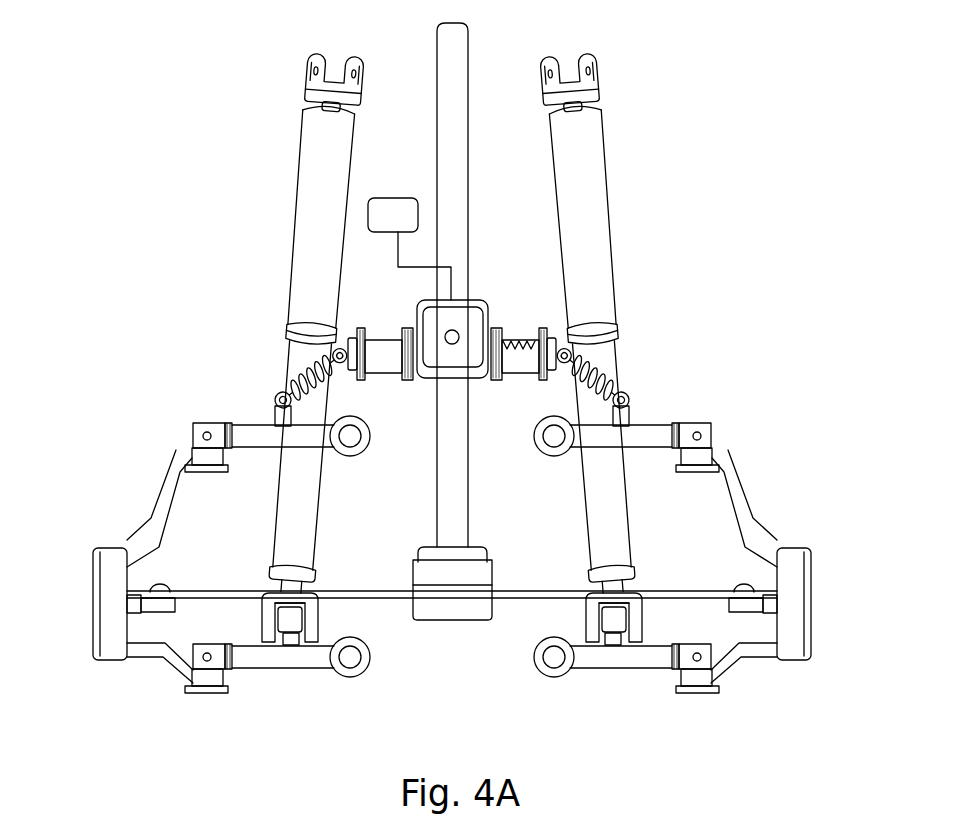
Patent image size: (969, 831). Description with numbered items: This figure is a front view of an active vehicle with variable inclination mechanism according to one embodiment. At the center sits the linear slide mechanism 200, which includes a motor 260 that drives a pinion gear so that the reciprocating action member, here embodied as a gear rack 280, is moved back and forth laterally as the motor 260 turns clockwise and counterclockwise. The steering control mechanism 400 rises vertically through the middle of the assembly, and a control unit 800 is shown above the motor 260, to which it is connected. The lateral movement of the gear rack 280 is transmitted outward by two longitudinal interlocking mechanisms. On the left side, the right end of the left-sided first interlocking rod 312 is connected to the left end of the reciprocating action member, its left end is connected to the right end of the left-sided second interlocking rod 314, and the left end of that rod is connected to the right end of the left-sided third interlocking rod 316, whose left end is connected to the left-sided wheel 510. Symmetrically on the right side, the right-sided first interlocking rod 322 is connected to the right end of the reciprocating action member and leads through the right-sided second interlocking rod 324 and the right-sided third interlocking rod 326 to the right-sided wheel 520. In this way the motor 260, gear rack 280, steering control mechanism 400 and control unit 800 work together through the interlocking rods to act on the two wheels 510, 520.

The linear slide mechanism 200 is at (454, 348).
The motor 260 is at (433, 357).
The gear rack 280 is at (530, 337).
The left-sided first interlocking rod 312 is at (285, 362).
The left-sided second interlocking rod 314 is at (253, 430).
The left-sided third interlocking rod 316 is at (165, 498).
The right-sided first interlocking rod 322 is at (623, 372).
The right-sided second interlocking rod 324 is at (652, 433).
The right-sided third interlocking rod 326 is at (740, 498).
The steering control mechanism 400 is at (460, 94).
The left-sided wheel 510 is at (102, 600).
The right-sided wheel 520 is at (805, 600).
The control unit 800 is at (395, 197).